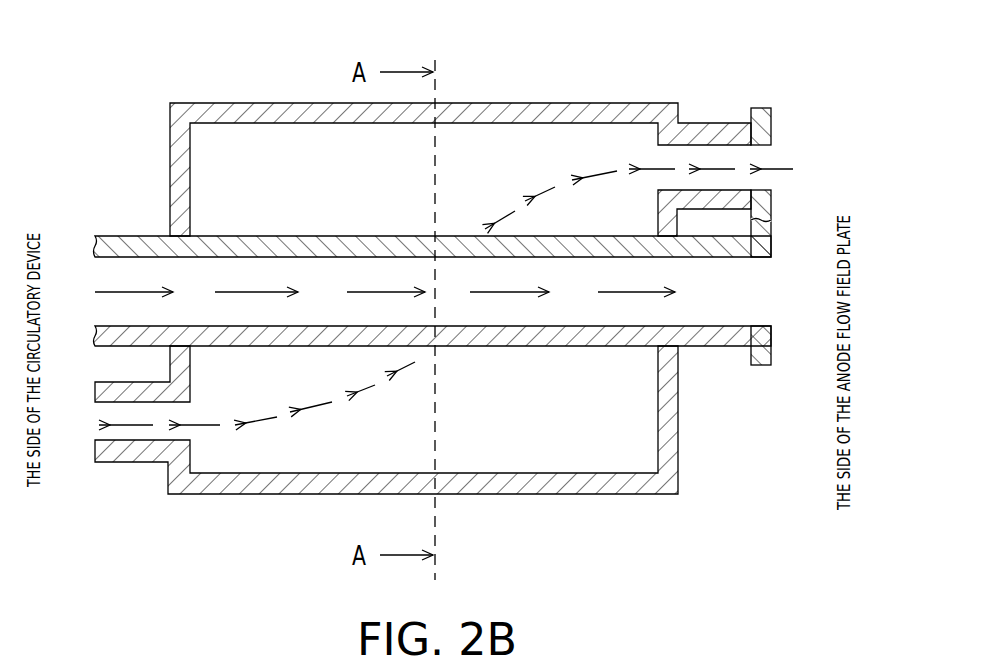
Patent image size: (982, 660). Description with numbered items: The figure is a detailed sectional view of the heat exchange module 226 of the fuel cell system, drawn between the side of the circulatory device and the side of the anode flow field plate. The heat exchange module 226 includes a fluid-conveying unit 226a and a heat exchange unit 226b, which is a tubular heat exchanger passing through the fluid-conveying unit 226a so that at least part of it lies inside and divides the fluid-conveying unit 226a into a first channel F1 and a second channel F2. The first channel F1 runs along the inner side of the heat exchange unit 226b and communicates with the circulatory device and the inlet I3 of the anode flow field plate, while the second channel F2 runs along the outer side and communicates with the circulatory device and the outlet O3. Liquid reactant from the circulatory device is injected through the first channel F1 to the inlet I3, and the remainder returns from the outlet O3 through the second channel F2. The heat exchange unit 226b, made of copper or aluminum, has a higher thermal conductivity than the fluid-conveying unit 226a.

The heat exchange module 226 is at (235, 46).
The fluid-conveying unit 226a is at (228, 117).
The heat exchange unit 226b is at (232, 248).
The outlet O3 is at (753, 157).
The inlet I3 is at (699, 308).
The first channel F1 is at (163, 313).
The second channel F2 is at (458, 402).